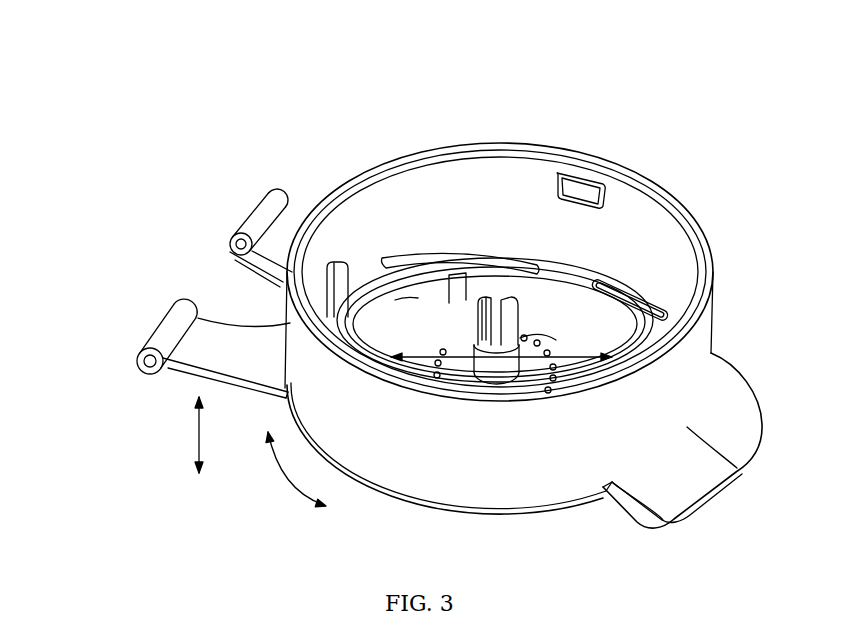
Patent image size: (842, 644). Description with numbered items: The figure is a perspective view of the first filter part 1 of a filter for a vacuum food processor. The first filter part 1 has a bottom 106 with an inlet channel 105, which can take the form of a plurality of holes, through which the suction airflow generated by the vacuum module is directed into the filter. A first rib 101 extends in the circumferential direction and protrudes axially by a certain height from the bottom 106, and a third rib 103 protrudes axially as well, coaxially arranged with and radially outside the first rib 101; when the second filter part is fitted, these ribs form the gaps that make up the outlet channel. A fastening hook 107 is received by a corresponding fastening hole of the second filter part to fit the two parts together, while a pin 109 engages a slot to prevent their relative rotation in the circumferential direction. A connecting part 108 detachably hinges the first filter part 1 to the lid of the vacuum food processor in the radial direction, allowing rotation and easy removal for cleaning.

The first filter part 1 is at (182, 75).
The first rib 101 is at (405, 305).
The third rib 103 is at (331, 262).
The inlet channel 105 is at (537, 335).
The bottom 106 is at (574, 345).
The fastening hook 107 is at (490, 285).
The connecting part 108 is at (163, 295).
The pin 109 is at (320, 222).